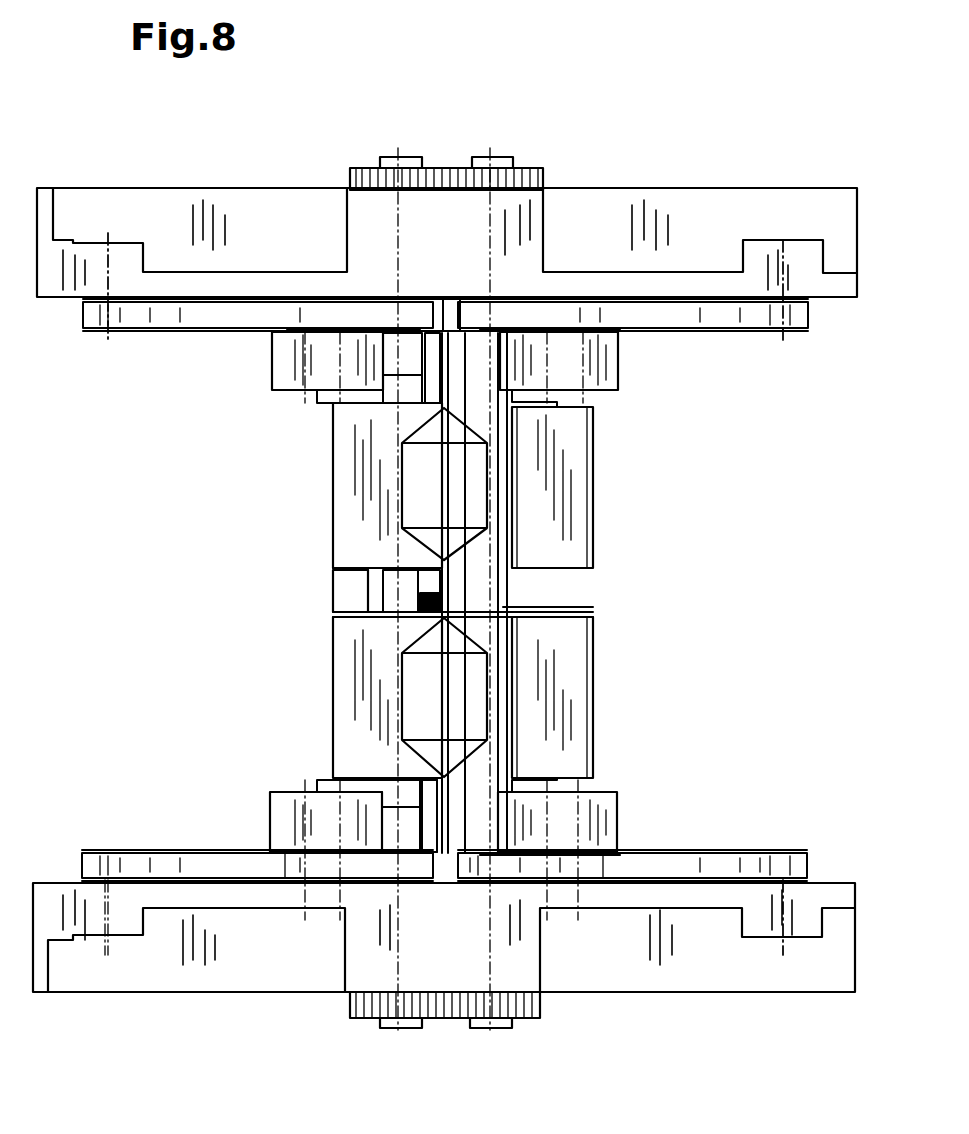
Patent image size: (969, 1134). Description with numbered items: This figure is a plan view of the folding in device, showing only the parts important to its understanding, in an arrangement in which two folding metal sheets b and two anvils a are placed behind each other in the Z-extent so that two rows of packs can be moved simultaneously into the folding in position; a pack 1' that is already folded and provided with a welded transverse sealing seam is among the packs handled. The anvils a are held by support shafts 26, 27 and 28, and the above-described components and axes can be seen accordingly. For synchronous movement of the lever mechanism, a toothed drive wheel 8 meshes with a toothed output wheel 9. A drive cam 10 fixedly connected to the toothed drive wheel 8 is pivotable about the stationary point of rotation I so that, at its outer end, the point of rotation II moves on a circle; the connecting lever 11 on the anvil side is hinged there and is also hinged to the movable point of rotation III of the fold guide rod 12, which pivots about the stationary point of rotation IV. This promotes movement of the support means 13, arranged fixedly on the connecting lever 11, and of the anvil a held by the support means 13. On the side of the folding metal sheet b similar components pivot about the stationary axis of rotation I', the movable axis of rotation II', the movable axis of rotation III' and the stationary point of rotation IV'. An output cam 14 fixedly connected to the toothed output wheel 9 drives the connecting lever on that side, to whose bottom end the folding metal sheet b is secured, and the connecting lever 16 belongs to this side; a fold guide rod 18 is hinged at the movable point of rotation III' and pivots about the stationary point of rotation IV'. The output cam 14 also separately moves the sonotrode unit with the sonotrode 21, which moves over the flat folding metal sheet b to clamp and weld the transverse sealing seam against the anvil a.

The toothed drive wheel 8 is at (427, 168).
The toothed output wheel 9 is at (463, 168).
The drive cam 10 is at (370, 860).
The connecting lever 11 is at (285, 807).
The fold guide rod 12 is at (180, 863).
The support means 13 is at (325, 790).
The output cam 14 is at (533, 870).
The connecting lever 16 is at (603, 363).
The fold guide rod 18 is at (673, 868).
The sonotrode 21 is at (565, 458).
The support shaft 26 is at (347, 600).
The support shaft 27 is at (400, 582).
The support shaft 28 is at (428, 600).
The anvil a is at (365, 470).
The folding metal sheet b is at (457, 355).
The pack 1' is at (480, 592).
The stationary point of rotation I is at (395, 564).
The stationary axis of rotation I' is at (522, 564).
The point of rotation II is at (285, 626).
The movable axis of rotation II' is at (607, 626).
The movable point of rotation III is at (255, 626).
The movable axis of rotation III' is at (611, 626).
The stationary point of rotation IV is at (103, 594).
The stationary point of rotation IV' is at (819, 597).